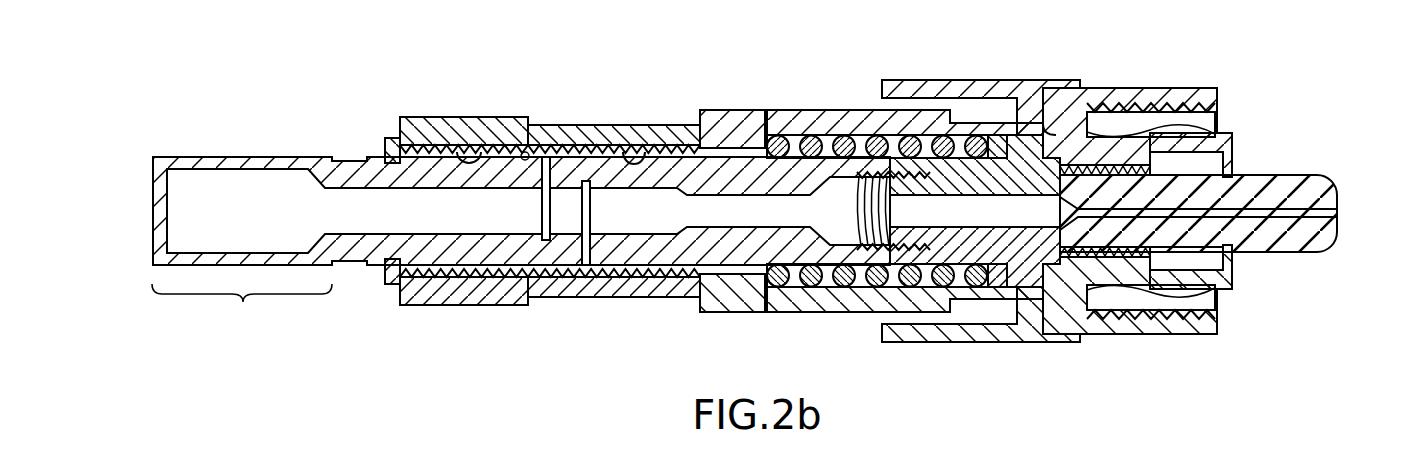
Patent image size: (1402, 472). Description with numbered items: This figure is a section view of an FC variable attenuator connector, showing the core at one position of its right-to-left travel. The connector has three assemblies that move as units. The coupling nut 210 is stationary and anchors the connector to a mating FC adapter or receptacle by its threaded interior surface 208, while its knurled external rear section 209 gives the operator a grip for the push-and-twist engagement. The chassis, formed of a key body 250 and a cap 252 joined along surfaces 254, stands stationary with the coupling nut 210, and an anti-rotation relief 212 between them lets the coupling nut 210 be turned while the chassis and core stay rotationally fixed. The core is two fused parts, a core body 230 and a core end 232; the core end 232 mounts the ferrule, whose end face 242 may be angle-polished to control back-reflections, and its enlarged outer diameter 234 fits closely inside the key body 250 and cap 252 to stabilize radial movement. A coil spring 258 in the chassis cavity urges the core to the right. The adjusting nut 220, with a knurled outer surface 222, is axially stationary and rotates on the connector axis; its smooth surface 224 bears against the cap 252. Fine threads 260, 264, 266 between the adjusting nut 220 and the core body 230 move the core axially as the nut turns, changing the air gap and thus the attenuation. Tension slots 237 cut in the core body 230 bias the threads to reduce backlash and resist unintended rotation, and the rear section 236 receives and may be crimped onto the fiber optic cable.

The threaded interior surface 208 is at (1222, 133).
The knurled external rear section 209 is at (920, 344).
The coupling nut 210 is at (895, 79).
The anti-rotation relief 212 is at (1007, 316).
The adjusting nut 220 is at (632, 298).
The knurled outer surface 222 is at (467, 304).
The surface 224 is at (710, 132).
The core body 230 is at (291, 157).
The core end 232 is at (1008, 248).
The enlarged outer diameter 234 is at (997, 147).
The section 236 is at (242, 310).
The tension slots 237 is at (556, 192).
The end face 242 is at (1340, 232).
The key body 250 is at (1095, 147).
The cap 252 is at (813, 110).
The surfaces 254 is at (1047, 117).
The coil spring 258 is at (930, 130).
The threads 260 is at (495, 148).
The threads 264 is at (533, 149).
The threads 266 is at (653, 148).